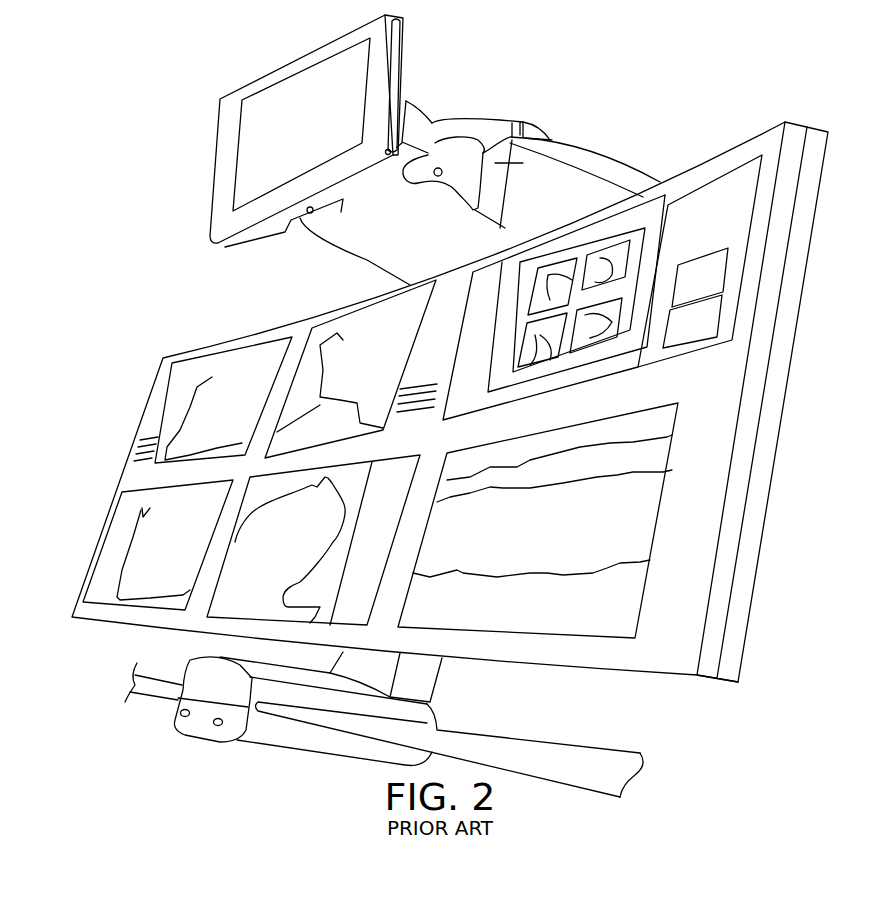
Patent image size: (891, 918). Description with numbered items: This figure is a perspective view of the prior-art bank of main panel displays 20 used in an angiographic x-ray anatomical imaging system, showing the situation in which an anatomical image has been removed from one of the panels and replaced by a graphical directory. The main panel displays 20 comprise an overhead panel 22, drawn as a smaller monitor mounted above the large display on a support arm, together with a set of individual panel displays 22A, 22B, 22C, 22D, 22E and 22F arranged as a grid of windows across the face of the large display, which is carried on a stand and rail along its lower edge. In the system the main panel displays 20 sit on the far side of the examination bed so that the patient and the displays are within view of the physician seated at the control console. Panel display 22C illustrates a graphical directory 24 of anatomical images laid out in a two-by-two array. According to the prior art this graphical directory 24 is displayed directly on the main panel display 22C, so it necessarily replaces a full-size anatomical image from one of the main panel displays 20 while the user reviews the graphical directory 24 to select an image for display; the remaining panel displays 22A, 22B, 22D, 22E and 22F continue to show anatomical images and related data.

The main panel displays 20 is at (832, 356).
The overhead panel 22 is at (298, 58).
The panel display 22A is at (173, 387).
The panel display 22B is at (403, 316).
The panel display 22C is at (655, 295).
The panel display 22D is at (117, 550).
The panel display 22E is at (227, 610).
The panel display 22F is at (512, 620).
The graphical directory 24 is at (650, 243).